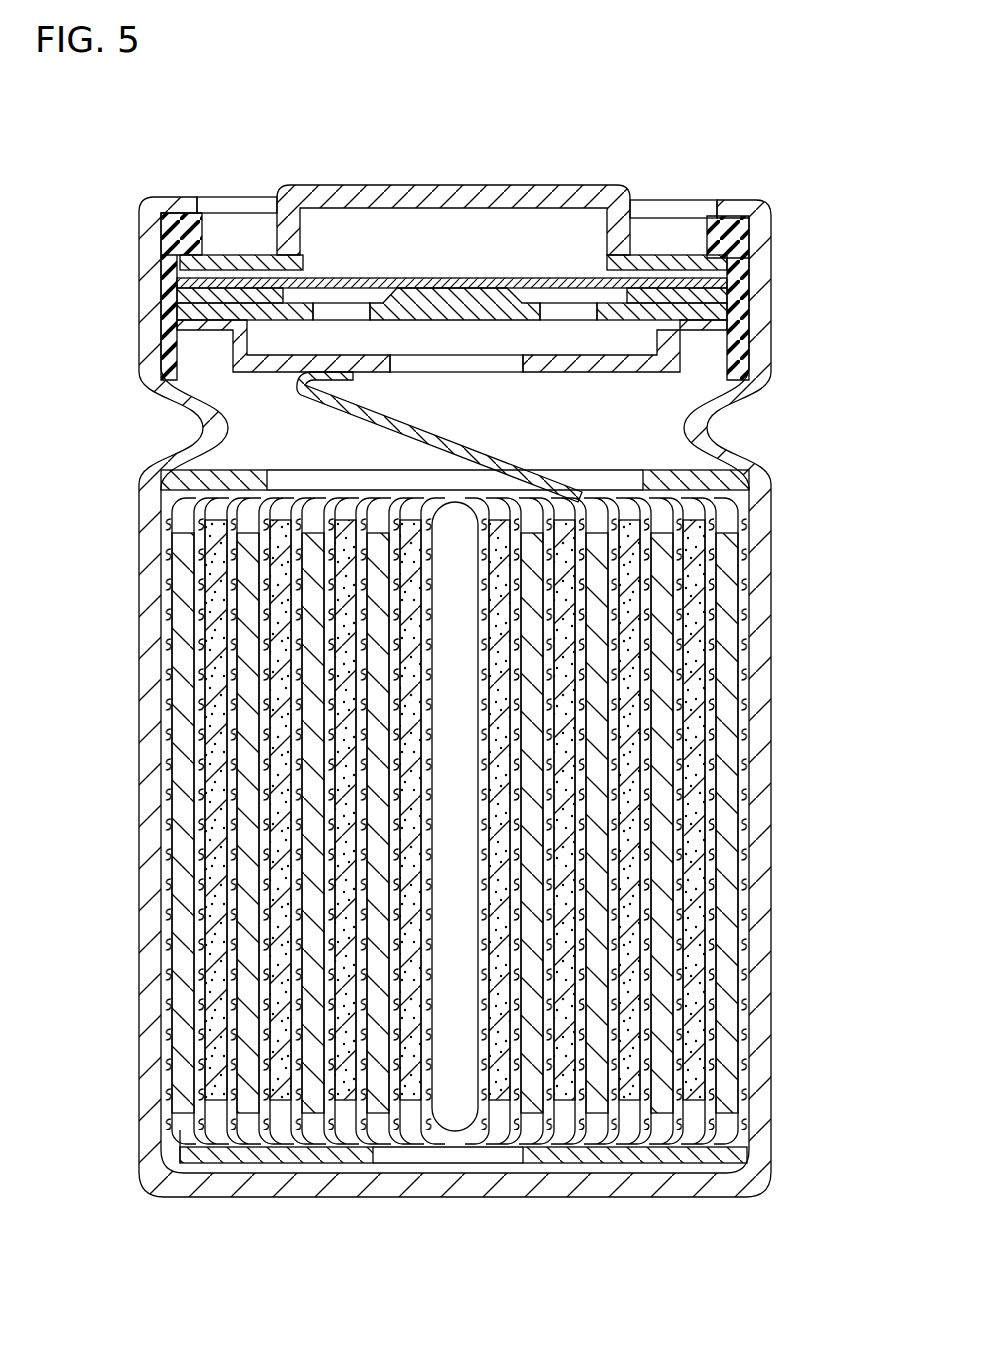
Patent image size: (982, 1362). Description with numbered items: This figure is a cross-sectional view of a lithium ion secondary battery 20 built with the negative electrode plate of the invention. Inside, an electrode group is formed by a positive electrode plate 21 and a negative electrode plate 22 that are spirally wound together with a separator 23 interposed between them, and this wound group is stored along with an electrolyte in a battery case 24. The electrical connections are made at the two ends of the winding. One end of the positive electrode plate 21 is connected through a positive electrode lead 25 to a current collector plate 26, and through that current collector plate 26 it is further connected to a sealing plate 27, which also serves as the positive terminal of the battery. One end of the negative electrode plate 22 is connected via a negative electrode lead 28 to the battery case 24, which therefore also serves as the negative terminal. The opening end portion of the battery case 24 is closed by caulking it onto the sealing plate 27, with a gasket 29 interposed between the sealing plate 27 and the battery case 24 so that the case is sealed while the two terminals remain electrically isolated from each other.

The lithium ion secondary battery 20 is at (789, 163).
The positive electrode plate 21 is at (700, 910).
The negative electrode plate 22 is at (735, 866).
The separator 23 is at (745, 737).
The battery case 24 is at (152, 665).
The positive electrode lead 25 is at (507, 463).
The current collector plate 26 is at (607, 373).
The sealing plate 27 is at (355, 184).
The negative electrode lead 28 is at (515, 1197).
The gasket 29 is at (745, 286).